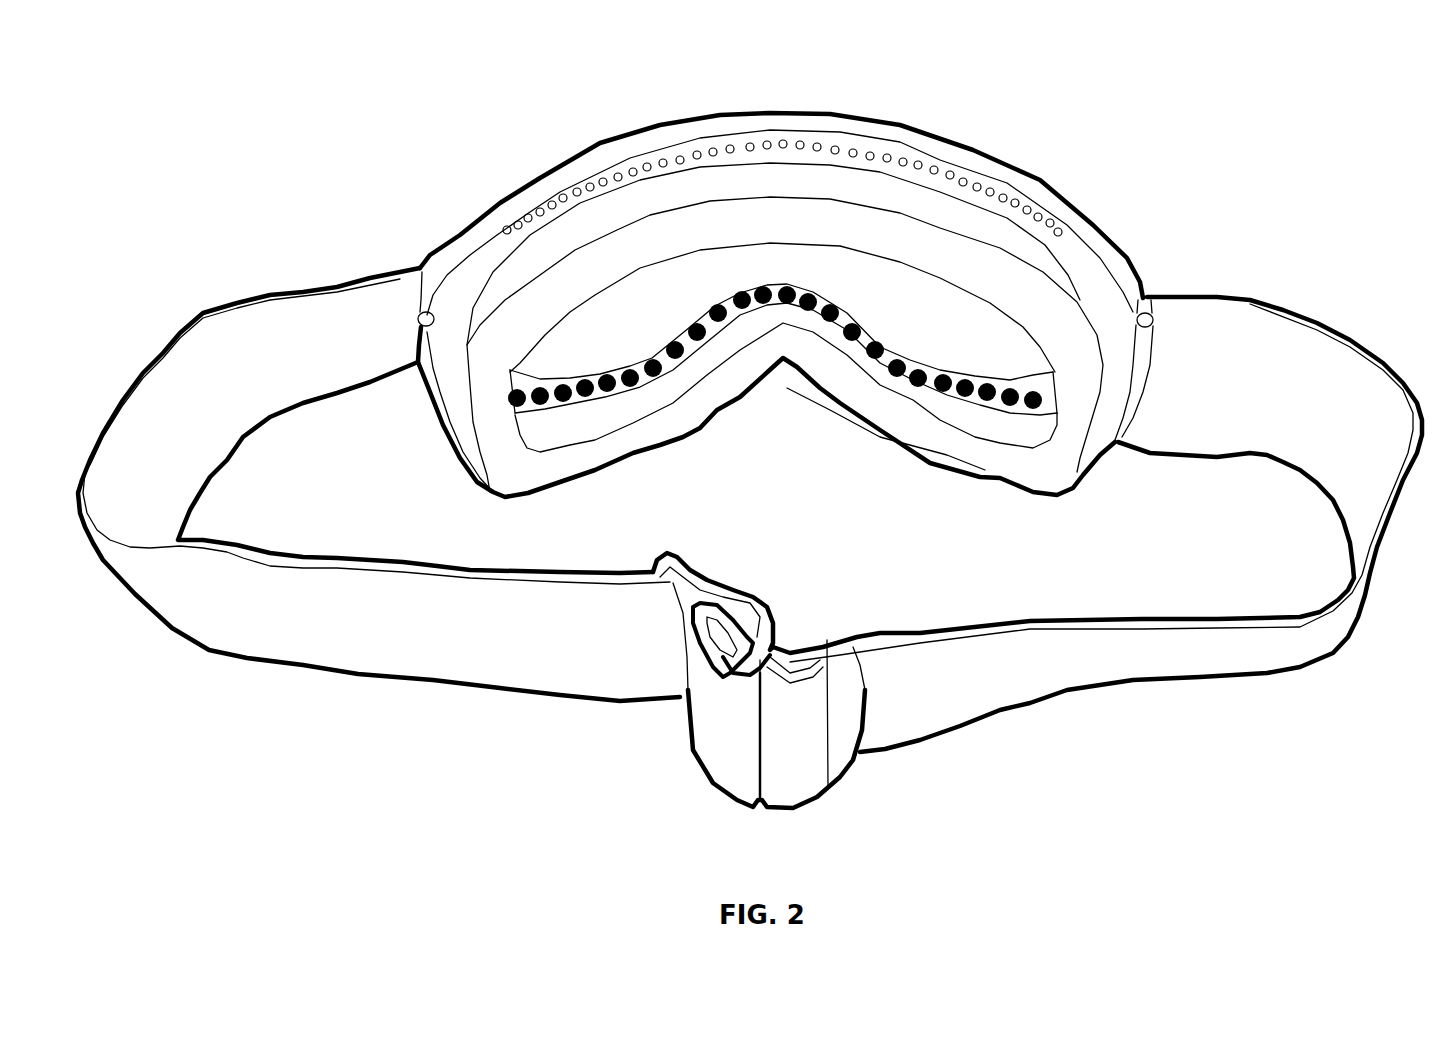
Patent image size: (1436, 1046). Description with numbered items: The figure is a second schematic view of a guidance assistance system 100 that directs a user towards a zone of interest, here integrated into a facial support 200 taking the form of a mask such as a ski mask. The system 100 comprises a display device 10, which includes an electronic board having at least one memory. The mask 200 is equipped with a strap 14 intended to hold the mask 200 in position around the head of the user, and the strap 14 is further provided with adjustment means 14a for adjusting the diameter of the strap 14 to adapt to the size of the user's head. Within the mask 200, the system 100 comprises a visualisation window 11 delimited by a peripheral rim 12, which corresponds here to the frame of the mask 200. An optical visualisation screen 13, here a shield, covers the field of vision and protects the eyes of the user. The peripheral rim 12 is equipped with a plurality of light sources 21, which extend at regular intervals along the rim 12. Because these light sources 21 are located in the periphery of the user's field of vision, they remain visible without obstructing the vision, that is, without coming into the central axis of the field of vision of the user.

The display device 10 is at (785, 305).
The visualisation window 11 is at (783, 374).
The peripheral rim 12 is at (783, 408).
The optical visualisation screen 13 is at (756, 369).
The strap 14 is at (750, 538).
The adjustment means 14a is at (820, 680).
The light sources 21 is at (775, 245).
The guidance assistance system 100 is at (837, 304).
The facial support 200 is at (750, 438).